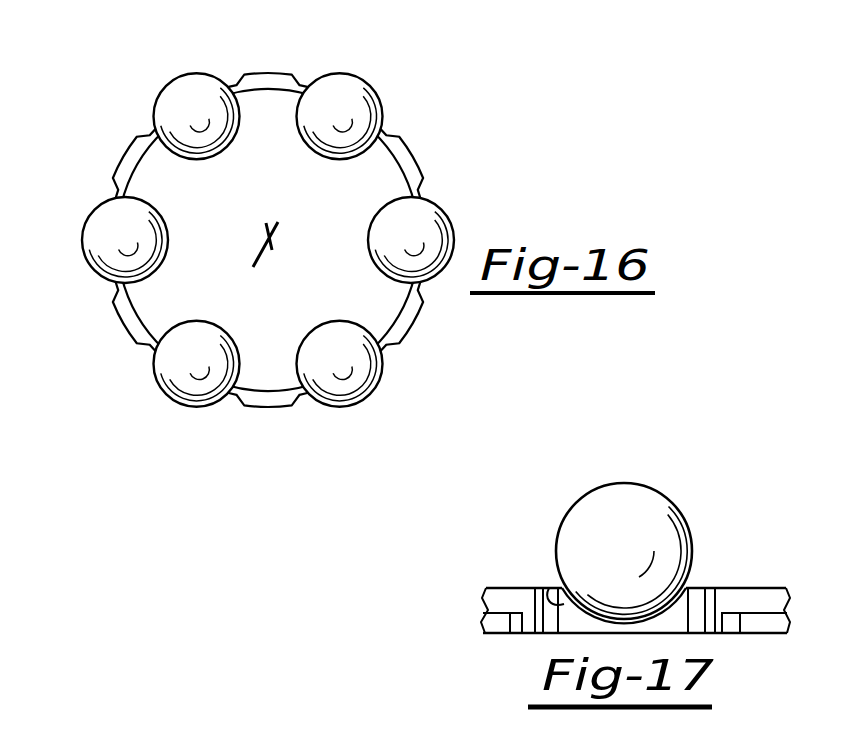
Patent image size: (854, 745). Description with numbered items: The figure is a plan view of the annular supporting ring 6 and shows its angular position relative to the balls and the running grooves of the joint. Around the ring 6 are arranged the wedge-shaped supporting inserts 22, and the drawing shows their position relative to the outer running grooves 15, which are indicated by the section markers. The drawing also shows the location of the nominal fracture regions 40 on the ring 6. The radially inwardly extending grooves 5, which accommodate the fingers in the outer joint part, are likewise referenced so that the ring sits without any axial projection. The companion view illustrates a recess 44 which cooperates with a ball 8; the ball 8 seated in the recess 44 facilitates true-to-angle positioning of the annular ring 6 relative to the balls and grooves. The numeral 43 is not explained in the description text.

In FIG. 16, the grooves 5 is at (101, 240).
In FIG. 16, the wedge-shaped supporting inserts 22 is at (263, 74).
In FIG. 16, the retainer segment 43 is at (153, 132).
In FIG. 16, the nominal fracture regions 40 is at (386, 124).
In FIG. 16, the outer running grooves 15 is at (237, 9).
In FIG. 17, the ball 8 is at (652, 537).
In FIG. 17, the annular ring 6 is at (674, 616).
In FIG. 17, the recess 44 is at (556, 604).